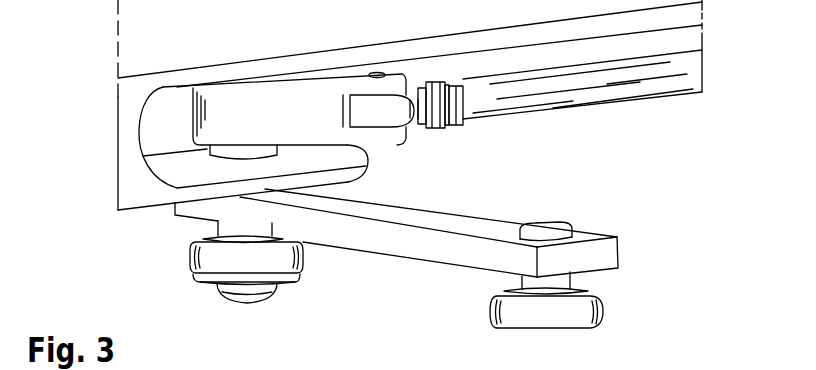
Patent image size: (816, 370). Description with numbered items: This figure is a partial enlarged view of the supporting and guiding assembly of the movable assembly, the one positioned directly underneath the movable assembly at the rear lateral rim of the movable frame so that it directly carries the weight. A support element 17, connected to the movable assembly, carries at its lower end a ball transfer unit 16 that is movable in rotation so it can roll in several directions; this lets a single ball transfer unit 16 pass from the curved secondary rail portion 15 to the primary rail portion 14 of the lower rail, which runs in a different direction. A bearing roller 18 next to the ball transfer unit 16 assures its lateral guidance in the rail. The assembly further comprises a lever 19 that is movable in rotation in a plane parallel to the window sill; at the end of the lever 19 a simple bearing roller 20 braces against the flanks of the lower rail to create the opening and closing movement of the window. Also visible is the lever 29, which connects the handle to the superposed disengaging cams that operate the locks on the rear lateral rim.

The primary rail portion 14 is at (276, 222).
The secondary rail portion 15 is at (404, 369).
The ball transfer unit 16 is at (247, 304).
The support element 17 is at (206, 231).
The bearing roller 18 is at (305, 256).
The lever 19 is at (480, 222).
The bearing roller 20 is at (607, 310).
The lever 29 is at (605, 80).